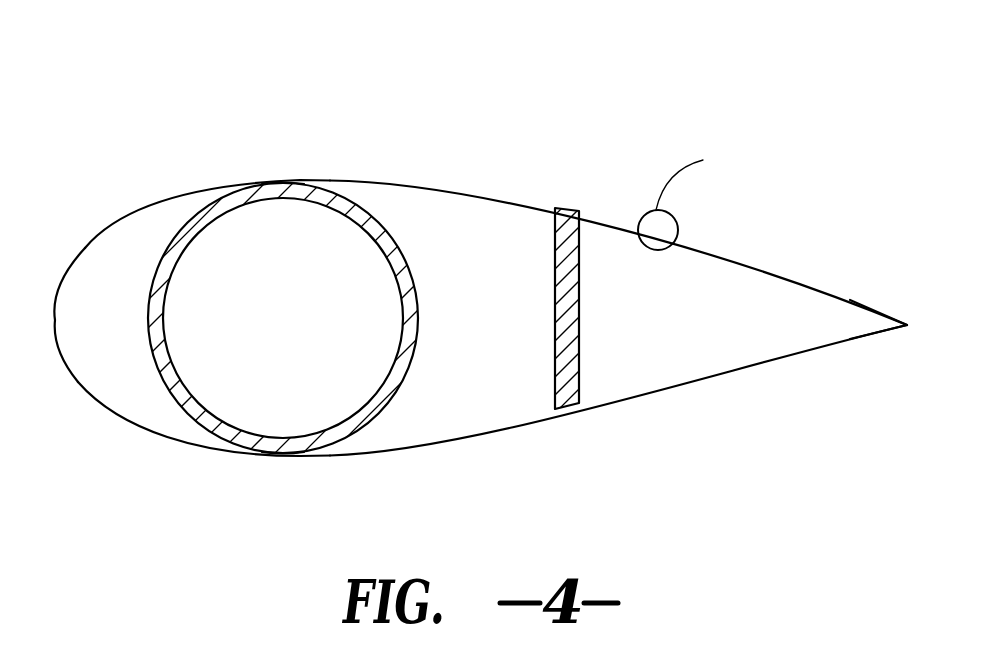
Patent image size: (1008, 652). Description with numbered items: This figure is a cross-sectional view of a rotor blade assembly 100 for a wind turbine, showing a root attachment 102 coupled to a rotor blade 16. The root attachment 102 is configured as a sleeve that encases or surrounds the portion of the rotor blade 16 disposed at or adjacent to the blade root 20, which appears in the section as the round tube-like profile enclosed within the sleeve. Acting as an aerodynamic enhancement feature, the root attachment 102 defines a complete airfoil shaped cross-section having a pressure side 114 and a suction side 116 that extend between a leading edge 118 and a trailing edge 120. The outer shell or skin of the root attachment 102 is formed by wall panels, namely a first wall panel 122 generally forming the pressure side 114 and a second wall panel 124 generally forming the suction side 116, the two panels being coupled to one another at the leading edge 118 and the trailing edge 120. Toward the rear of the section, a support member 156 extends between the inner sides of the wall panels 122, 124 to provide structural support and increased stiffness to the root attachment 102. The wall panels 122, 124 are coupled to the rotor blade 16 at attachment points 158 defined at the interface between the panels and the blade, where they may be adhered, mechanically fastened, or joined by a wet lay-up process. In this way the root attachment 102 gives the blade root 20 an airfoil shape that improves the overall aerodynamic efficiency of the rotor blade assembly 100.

The rotor blade assembly 100 is at (458, 258).
The root attachment 102 is at (137, 202).
The leading edge 118 is at (55, 320).
The trailing edge 120 is at (905, 325).
The first wall panel 122 is at (417, 187).
The suction side 116 is at (485, 195).
The pressure side 114 is at (480, 435).
The second wall panel 124 is at (415, 450).
The blade root 20 is at (412, 325).
The rotor blade 16 is at (268, 333).
The attachment points 158 is at (282, 182).
The support member 156 is at (580, 332).